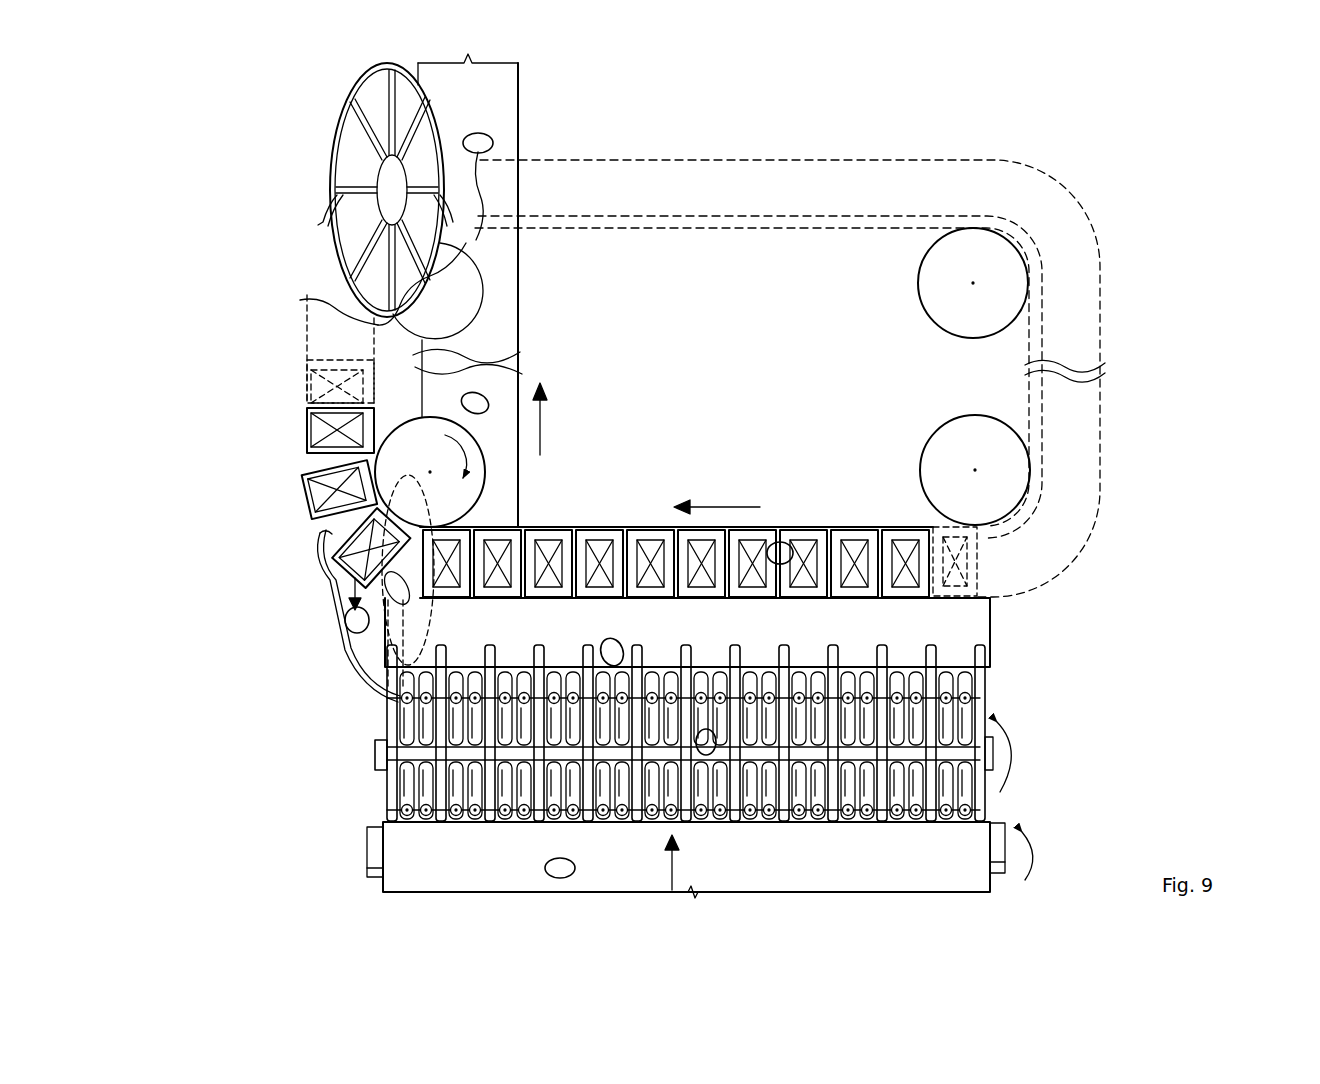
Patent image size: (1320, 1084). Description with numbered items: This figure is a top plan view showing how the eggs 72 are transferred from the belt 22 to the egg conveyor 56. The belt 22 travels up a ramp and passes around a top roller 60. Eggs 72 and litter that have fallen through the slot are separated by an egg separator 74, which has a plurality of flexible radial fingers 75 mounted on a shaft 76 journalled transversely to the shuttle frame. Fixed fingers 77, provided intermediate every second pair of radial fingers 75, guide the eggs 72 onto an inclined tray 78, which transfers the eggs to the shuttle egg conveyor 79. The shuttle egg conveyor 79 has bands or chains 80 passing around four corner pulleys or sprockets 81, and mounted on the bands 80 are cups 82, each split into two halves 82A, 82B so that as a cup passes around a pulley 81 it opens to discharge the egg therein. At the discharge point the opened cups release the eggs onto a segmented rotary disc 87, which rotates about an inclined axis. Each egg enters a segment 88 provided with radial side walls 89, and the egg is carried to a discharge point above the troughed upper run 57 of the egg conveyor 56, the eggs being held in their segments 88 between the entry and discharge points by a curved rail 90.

The belt 22 is at (378, 888).
The egg conveyor 56 is at (520, 293).
The troughed upper run 57 is at (508, 377).
The top roller 60 is at (1010, 826).
The eggs 72 is at (563, 877).
The egg separator 74 is at (380, 792).
The flexible radial fingers 75 is at (432, 724).
The shaft 76 is at (378, 752).
The fixed fingers 77 is at (930, 680).
The inclined tray 78 is at (975, 620).
The shuttle egg conveyor 79 is at (1110, 440).
The bands or chains 80 is at (848, 232).
The corner pulleys or sprockets 81 is at (950, 335).
The cups 82 is at (815, 527).
The half cup 82A is at (558, 527).
The half cup 82B is at (607, 527).
The segmented rotary disc 87 is at (342, 185).
The segment 88 is at (370, 105).
The radial side walls 89 is at (365, 135).
The curved rail 90 is at (345, 620).